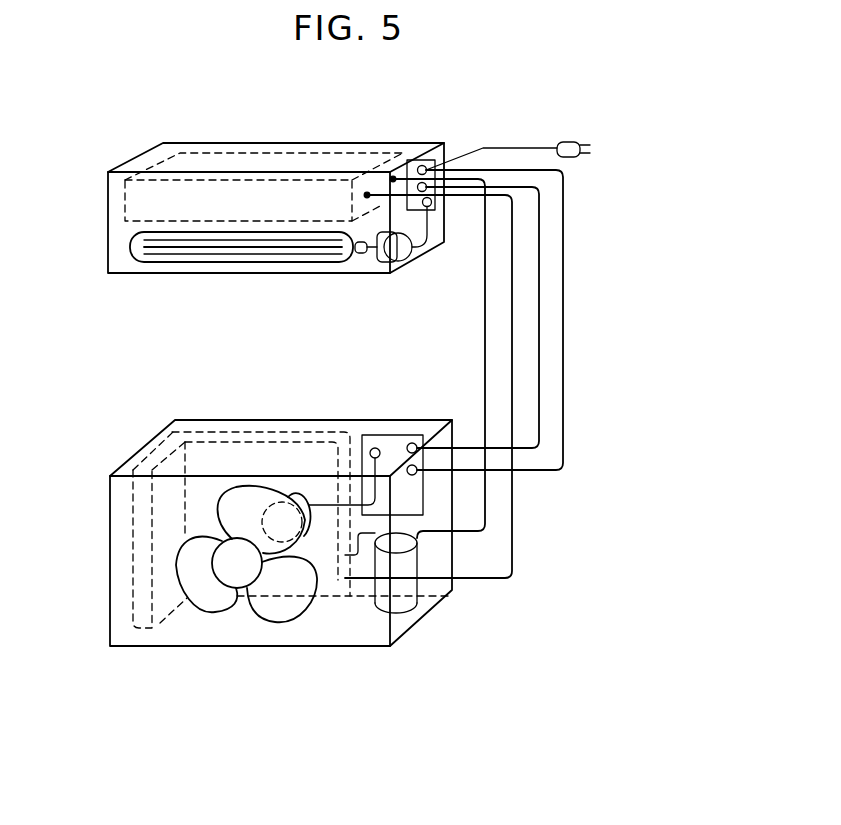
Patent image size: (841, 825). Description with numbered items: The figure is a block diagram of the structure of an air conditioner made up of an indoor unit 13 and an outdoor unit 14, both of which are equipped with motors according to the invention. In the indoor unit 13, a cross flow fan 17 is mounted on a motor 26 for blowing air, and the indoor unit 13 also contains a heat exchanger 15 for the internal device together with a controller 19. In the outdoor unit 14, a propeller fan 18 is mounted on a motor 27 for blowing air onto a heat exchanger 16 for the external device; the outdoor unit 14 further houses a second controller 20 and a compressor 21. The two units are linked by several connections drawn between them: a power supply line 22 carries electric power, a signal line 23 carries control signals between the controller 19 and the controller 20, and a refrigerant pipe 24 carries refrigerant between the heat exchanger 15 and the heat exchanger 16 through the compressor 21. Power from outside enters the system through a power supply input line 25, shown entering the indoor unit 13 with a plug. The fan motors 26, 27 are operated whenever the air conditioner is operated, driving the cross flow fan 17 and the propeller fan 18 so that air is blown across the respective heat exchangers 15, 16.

The indoor unit 13 is at (272, 107).
The outdoor unit 14 is at (288, 392).
The heat exchanger for the internal device 15 is at (205, 160).
The heat exchanger for the external device 16 is at (195, 440).
The cross flow fan 17 is at (178, 252).
The propeller fan 18 is at (203, 592).
The controller 19 is at (412, 162).
The controller 20 is at (392, 445).
The compressor 21 is at (403, 597).
The power supply line 22 is at (563, 277).
The signal line 23 is at (539, 208).
The refrigerant pipe 24 is at (487, 497).
The power supply input line 25 is at (513, 147).
The motor 26 is at (407, 257).
The motor 27 is at (307, 530).